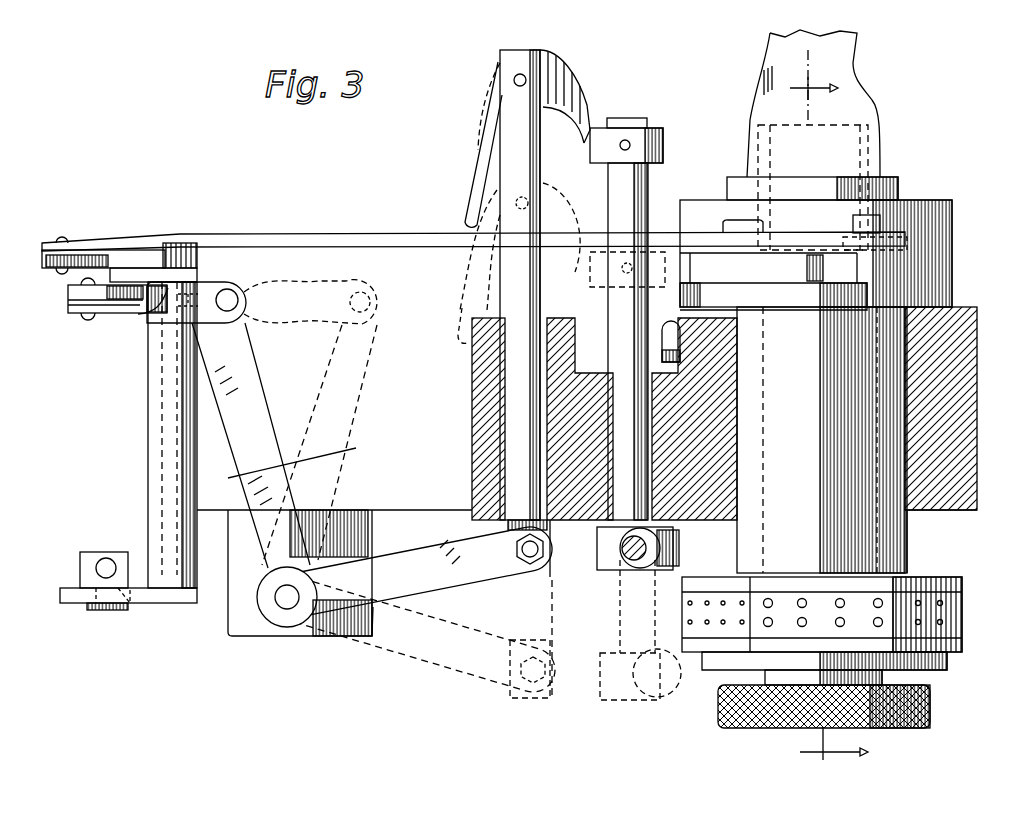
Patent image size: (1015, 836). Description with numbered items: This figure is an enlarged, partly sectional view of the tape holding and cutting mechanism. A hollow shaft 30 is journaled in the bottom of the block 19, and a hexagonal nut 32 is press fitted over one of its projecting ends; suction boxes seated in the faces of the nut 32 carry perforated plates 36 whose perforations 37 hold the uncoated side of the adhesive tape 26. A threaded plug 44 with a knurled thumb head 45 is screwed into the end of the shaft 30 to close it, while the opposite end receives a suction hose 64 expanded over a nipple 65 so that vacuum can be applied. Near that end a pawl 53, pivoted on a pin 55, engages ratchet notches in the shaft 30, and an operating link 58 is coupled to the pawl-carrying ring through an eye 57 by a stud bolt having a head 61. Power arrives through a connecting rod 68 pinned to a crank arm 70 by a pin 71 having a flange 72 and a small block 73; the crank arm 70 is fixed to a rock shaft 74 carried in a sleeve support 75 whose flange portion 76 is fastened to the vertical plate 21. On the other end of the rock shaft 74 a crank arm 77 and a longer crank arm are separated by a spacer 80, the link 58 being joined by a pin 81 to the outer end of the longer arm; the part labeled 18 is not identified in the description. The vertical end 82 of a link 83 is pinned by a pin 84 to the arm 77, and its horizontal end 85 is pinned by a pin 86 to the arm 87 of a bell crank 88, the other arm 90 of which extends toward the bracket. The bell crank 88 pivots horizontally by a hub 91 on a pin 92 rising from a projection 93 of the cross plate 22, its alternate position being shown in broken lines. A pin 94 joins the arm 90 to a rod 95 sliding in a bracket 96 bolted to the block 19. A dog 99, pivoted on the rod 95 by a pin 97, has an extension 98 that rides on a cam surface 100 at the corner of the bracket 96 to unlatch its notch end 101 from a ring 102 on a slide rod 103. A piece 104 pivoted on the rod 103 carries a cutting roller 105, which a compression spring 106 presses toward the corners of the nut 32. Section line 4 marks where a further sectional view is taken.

The section line 4- 4 is at (829, 424).
The clamp block 18 is at (42, 260).
The block 19 is at (943, 511).
The vertical plate 21 is at (356, 448).
The cross plate 22 is at (405, 511).
The adhesive tape 26 is at (682, 613).
The hollow shaft 30 is at (908, 357).
The hexagonal nut 32 is at (953, 577).
The perforated plate 36 is at (777, 598).
The perforations 37 is at (837, 599).
The threaded plug 44 is at (780, 687).
The knurled thumb head 45 is at (931, 701).
The pawl 53 is at (752, 273).
The pin 55 is at (763, 307).
The eye 57 is at (780, 237).
The operating link 58 is at (340, 233).
The head 61 is at (757, 230).
The suction hose 64 is at (857, 51).
The nipple 65 is at (882, 148).
The connecting rod 68 is at (107, 567).
The crank arm 70 is at (70, 603).
The pin 71 is at (133, 604).
The flange 72 is at (105, 610).
The small block 73 is at (92, 553).
The rock shaft 74 is at (162, 439).
The sleeve support 75 is at (148, 379).
The flange portion 76 is at (200, 404).
The crank arm 77 is at (68, 293).
The spacer 80 is at (110, 268).
The pin 81 is at (62, 240).
The vertical end 82 is at (68, 309).
The link 83 is at (140, 310).
The pin 84 is at (88, 316).
The horizontal end 85 is at (200, 282).
The pin 86 is at (230, 289).
The bell crank arm 87 is at (254, 367).
The bell crank 88 is at (308, 570).
The bell crank arm 90 is at (437, 580).
The hub 91 is at (287, 612).
The pin 92 is at (282, 600).
The projection 93 is at (228, 622).
The pin 94 is at (545, 552).
The rod 95 is at (542, 293).
The bracket 96 is at (472, 417).
The pin 97 is at (513, 80).
The extension 98 is at (470, 169).
The dog 99 is at (552, 57).
The cam surface 100 is at (472, 321).
The notch end 101 is at (588, 102).
The ring 102 is at (655, 130).
The slide rod 103 is at (650, 171).
The piece 104 is at (597, 556).
The cutting roller 105 is at (676, 550).
The compression spring 106 is at (658, 538).